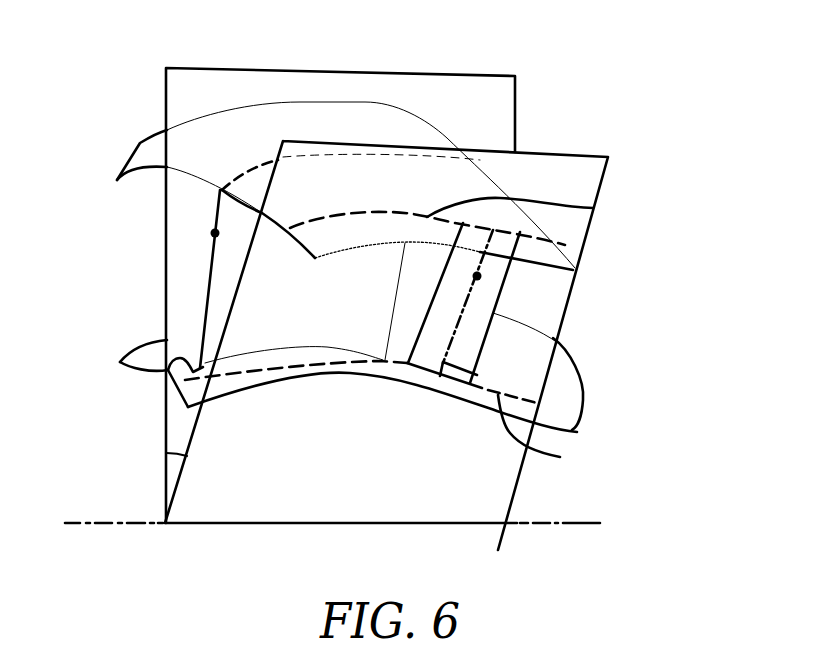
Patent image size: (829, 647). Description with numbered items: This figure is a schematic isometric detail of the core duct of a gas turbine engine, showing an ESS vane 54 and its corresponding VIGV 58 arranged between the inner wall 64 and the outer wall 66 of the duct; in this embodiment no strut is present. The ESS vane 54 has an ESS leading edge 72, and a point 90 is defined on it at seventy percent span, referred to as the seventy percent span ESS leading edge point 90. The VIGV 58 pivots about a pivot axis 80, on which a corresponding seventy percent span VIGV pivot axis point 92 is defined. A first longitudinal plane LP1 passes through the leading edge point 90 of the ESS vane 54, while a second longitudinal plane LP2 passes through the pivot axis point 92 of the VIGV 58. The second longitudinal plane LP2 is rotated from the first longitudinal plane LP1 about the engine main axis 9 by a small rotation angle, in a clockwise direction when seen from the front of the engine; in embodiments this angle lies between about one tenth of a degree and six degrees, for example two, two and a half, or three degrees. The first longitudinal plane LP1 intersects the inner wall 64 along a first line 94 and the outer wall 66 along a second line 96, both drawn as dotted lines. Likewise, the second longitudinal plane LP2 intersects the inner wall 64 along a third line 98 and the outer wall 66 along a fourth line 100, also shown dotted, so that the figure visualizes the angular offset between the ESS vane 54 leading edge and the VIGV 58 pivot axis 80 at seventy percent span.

The engine main axis 9 is at (570, 523).
The ESS vane 54 is at (225, 255).
The VIGV 58 is at (470, 330).
The inner wall 64 is at (573, 413).
The outer wall 66 is at (140, 143).
The ESS leading edge 72 is at (205, 307).
The pivot axis 80 is at (480, 378).
The 70% span ESS leading edge point 90 is at (215, 233).
The 70% span VIGV pivot axis point 92 is at (477, 276).
The first line 94 is at (168, 370).
The second line 96 is at (253, 167).
The third line 98 is at (560, 457).
The fourth line 100 is at (593, 208).
The first longitudinal plane LP1 is at (487, 92).
The second longitudinal plane LP2 is at (587, 168).